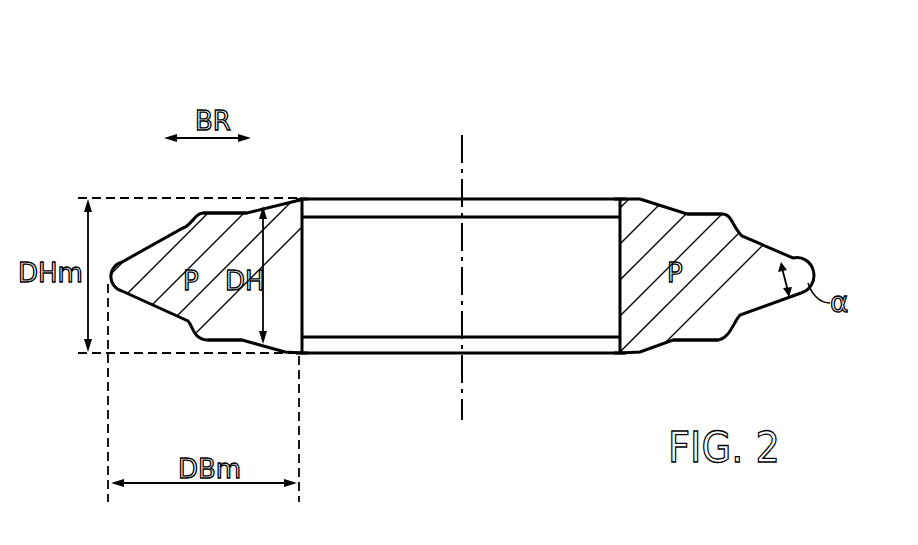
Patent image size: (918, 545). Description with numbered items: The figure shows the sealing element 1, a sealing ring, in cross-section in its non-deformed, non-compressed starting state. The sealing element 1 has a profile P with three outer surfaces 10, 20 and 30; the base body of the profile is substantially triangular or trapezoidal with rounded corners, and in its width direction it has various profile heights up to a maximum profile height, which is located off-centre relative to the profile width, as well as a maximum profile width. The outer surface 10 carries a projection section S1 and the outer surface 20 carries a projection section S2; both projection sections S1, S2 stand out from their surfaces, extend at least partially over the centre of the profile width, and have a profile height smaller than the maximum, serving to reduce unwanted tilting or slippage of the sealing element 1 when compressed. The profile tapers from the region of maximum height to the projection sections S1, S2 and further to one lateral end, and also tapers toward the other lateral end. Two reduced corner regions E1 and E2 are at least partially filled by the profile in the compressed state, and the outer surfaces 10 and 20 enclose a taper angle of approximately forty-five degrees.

The sealing element 1 is at (421, 166).
The outer surface 10 is at (172, 236).
The outer surface 20 is at (257, 346).
The outer surface 30 is at (306, 252).
The reduced corner region E1 is at (302, 199).
The reduced corner region E2 is at (303, 354).
The projection section S1 is at (214, 213).
The projection section S2 is at (196, 341).